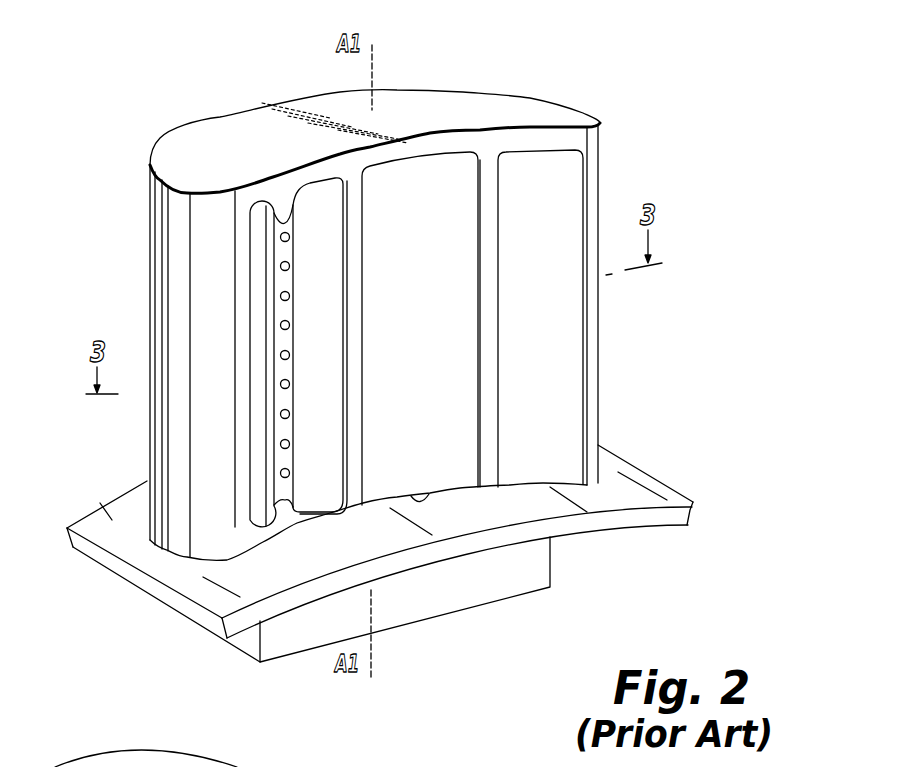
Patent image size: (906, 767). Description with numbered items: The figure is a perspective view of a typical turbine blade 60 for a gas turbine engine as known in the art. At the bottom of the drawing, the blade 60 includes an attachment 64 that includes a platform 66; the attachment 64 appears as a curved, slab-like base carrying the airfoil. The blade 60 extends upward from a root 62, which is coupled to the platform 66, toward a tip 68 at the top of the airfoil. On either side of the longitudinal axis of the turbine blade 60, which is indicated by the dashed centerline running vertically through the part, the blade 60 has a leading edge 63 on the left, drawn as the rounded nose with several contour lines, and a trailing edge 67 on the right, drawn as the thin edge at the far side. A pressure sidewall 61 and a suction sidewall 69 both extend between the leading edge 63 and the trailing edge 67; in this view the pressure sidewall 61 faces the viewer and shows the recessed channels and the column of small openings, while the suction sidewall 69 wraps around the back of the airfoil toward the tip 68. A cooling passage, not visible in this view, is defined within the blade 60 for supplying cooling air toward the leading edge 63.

The turbine blade 60 is at (90, 147).
The pressure sidewall 61 is at (510, 127).
The root 62 is at (425, 492).
The leading edge 63 is at (150, 277).
The attachment 64 is at (530, 571).
The platform 66 is at (688, 513).
The trailing edge 67 is at (600, 362).
The tip 68 is at (177, 153).
The suction sidewall 69 is at (428, 92).